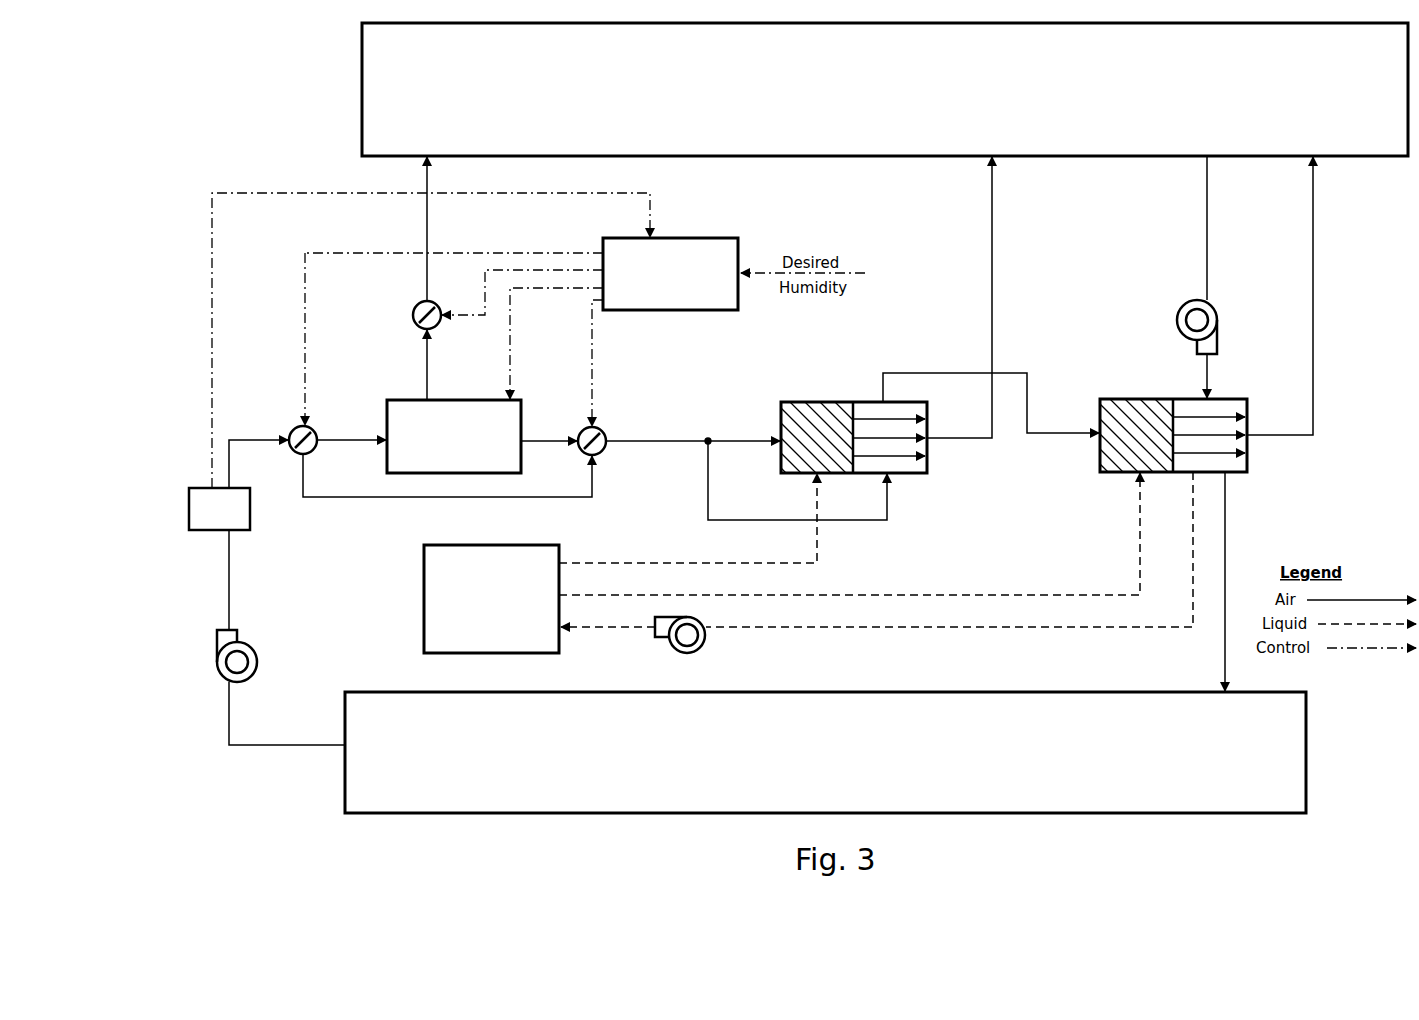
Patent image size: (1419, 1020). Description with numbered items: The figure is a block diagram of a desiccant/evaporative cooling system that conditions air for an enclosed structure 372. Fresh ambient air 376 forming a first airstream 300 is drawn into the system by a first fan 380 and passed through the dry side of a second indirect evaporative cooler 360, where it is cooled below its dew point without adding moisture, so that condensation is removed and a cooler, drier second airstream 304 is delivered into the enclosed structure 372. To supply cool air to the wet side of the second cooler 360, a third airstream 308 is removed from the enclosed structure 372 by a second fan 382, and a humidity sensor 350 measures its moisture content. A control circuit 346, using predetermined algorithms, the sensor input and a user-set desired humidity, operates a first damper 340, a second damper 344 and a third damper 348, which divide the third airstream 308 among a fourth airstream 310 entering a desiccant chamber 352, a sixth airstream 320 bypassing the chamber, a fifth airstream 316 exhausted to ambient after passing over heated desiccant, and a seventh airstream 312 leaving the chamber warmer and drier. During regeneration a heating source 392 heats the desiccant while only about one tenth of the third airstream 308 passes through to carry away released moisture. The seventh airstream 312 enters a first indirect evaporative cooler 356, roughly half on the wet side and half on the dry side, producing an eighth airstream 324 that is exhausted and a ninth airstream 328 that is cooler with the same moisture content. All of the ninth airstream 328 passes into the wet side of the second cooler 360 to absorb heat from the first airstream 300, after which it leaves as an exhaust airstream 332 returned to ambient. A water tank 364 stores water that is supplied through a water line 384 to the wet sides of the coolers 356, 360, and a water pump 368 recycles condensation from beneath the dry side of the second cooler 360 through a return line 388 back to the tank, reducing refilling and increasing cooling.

The first airstream 300 is at (1207, 286).
The second airstream 304 is at (1225, 512).
The third airstream 308 is at (240, 440).
The fourth airstream 310 is at (341, 440).
The seventh airstream 312 is at (640, 439).
The fifth airstream 316 is at (427, 240).
The sixth airstream 320 is at (362, 497).
The eighth airstream 324 is at (992, 288).
The ninth airstream 328 is at (1027, 372).
The exhaust line from second heat exchanger to ambient 332 is at (1313, 285).
The first damper 340 is at (296, 452).
The second damper 344 is at (413, 315).
The control circuit 346 is at (718, 240).
The third damper 348 is at (607, 450).
The humidity sensor 350 is at (250, 524).
The desiccant chamber 352 is at (410, 398).
The first indirect evaporative cooler 356 is at (793, 402).
The second indirect evaporative cooler 360 is at (1108, 400).
The water tank 364 is at (525, 545).
The water pump 368 is at (664, 645).
The enclosed structure 372 is at (940, 693).
The ambient air 376 is at (873, 152).
The first fan 380 is at (1212, 330).
The second fan 382 is at (257, 662).
The liquid line to second heat exchanger 384 is at (998, 596).
The liquid return line to water tank 388 is at (1088, 630).
The heating source 392 is at (512, 328).